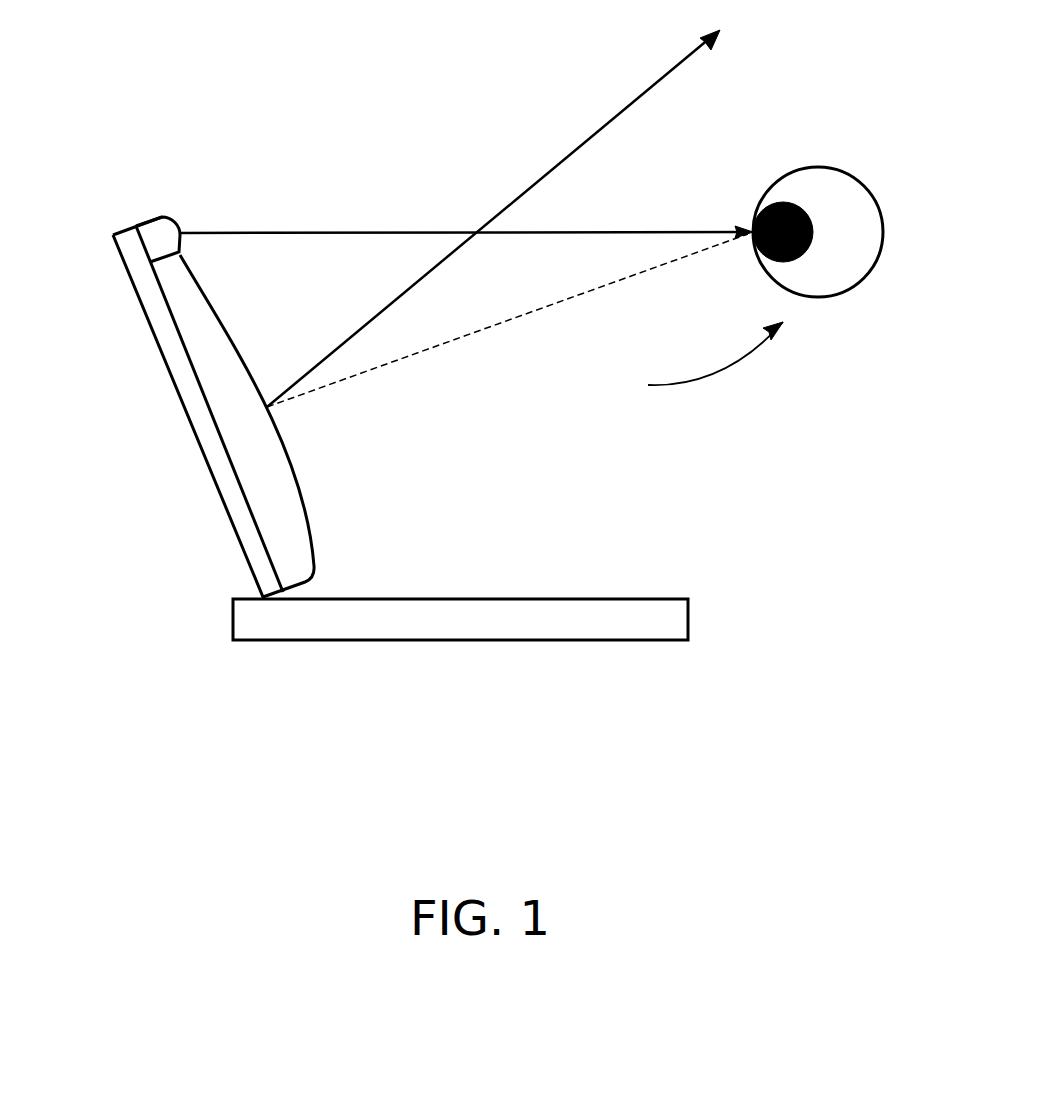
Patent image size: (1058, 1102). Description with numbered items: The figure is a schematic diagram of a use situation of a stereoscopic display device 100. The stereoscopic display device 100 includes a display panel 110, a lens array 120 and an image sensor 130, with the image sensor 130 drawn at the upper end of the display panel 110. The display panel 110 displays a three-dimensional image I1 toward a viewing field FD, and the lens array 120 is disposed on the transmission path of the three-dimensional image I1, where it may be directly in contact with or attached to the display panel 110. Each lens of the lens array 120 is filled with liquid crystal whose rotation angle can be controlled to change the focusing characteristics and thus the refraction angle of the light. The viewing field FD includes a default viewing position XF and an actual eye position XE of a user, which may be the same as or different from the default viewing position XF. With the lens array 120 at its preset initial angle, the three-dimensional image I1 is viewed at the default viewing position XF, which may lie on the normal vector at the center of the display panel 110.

The stereoscopic display device 100 is at (822, 771).
The display panel 110 is at (128, 240).
The lens array 120 is at (290, 538).
The image sensor 130 is at (157, 233).
The actual eye position XE is at (875, 198).
The default viewing position XF is at (516, 207).
The three-dimensional image I1 is at (363, 325).
The viewing field FD is at (727, 375).